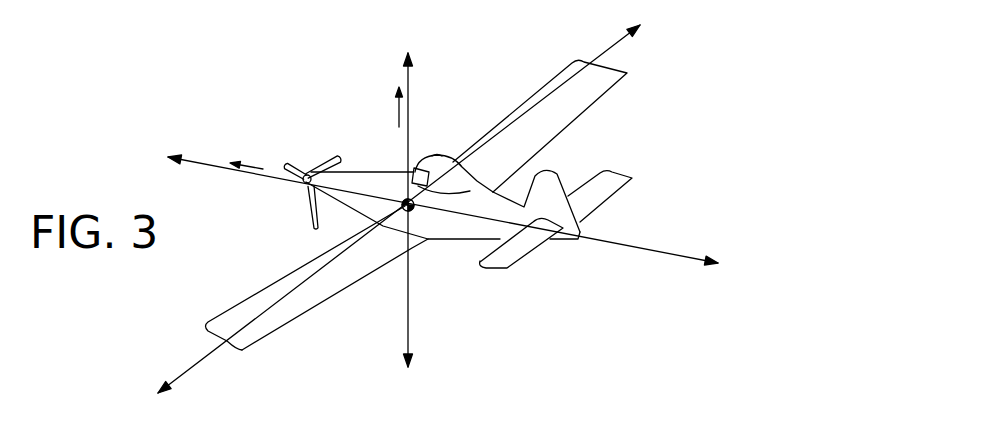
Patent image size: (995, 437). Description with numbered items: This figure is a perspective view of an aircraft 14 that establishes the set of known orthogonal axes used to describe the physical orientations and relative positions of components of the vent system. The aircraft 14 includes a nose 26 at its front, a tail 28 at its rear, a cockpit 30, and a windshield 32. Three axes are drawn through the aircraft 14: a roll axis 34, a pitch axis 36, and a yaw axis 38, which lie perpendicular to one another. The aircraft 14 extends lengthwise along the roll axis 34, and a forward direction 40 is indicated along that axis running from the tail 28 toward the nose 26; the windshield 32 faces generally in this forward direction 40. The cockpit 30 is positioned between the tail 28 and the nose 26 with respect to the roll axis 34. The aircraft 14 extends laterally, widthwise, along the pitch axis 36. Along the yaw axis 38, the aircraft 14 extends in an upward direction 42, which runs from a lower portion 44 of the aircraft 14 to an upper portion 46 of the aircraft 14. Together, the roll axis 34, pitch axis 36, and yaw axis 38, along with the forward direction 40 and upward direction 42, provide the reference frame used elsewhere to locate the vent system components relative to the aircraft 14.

The aircraft 14 is at (588, 105).
The nose 26 is at (302, 188).
The tail 28 is at (580, 229).
The cockpit 30 is at (449, 160).
The windshield 32 is at (415, 177).
The roll axis 34 is at (198, 160).
The pitch axis 36 is at (197, 360).
The yaw axis 38 is at (406, 326).
The forward direction 40 is at (250, 163).
The upward direction 42 is at (399, 113).
The lower portion 44 is at (447, 240).
The upper portion 46 is at (439, 159).